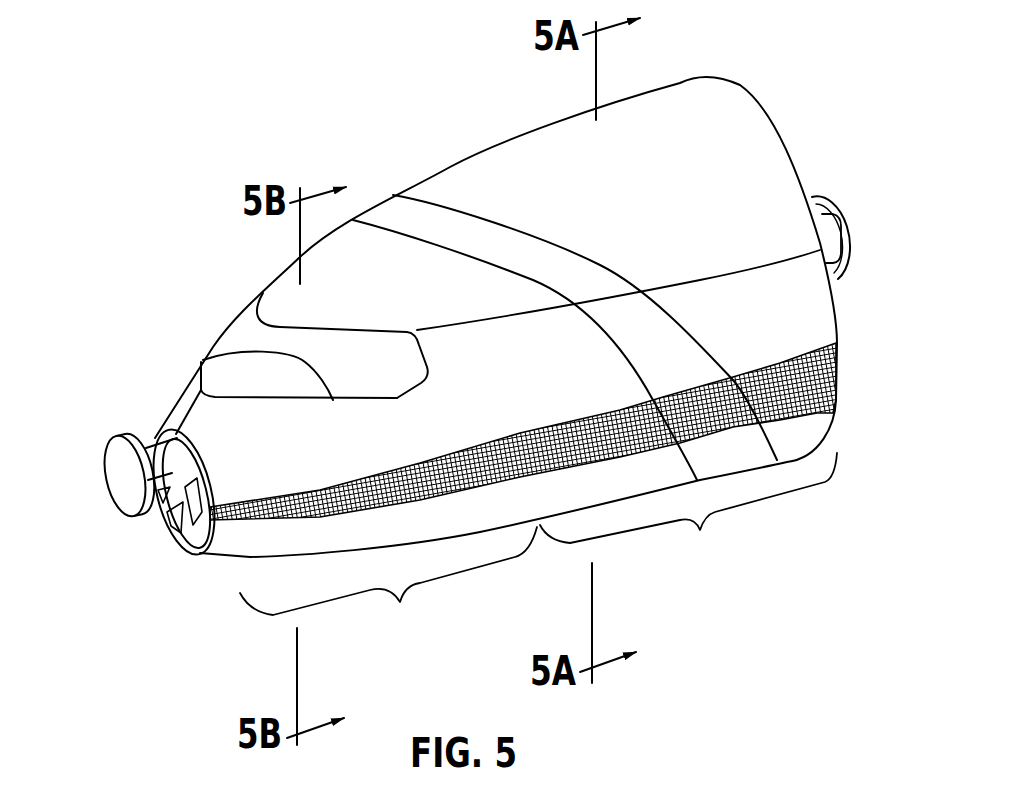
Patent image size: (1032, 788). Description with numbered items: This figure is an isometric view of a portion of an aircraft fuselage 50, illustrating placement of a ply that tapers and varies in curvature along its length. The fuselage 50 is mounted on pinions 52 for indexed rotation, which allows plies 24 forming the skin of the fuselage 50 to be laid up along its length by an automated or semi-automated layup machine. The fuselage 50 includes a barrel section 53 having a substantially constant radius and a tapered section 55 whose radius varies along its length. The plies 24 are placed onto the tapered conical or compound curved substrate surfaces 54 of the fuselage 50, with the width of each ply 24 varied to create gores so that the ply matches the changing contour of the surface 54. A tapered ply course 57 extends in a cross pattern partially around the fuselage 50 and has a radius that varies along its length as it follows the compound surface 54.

The aircraft fuselage 50 is at (271, 118).
The tapered ply course 57 is at (480, 240).
The compound curved substrate surface 54 is at (351, 442).
The pinion 52 is at (128, 477).
The ply 24 is at (784, 307).
The barrel section 53 is at (688, 507).
The tapered section 55 is at (388, 580).